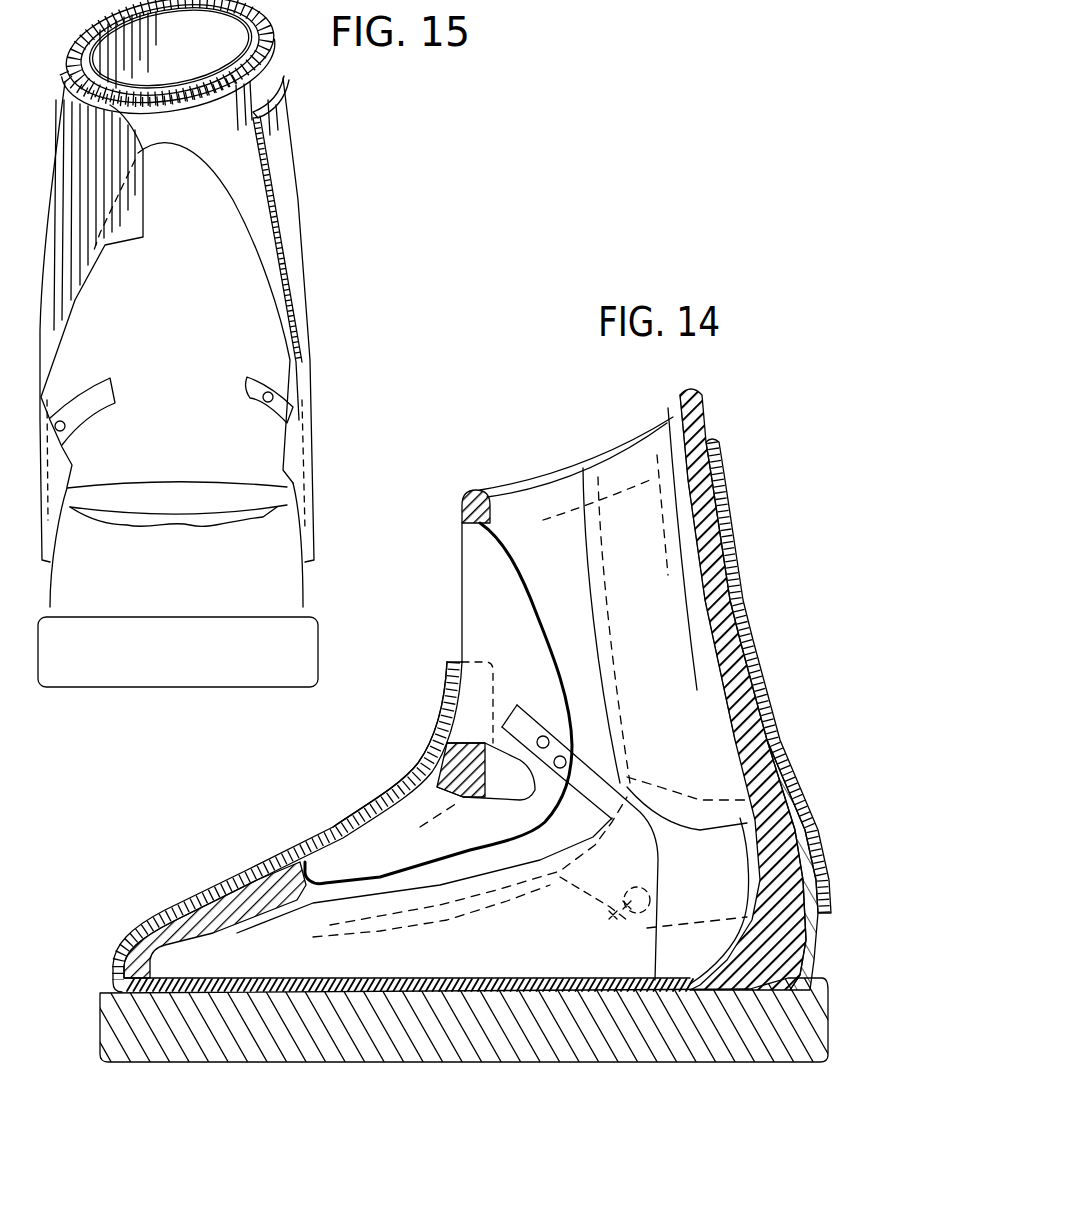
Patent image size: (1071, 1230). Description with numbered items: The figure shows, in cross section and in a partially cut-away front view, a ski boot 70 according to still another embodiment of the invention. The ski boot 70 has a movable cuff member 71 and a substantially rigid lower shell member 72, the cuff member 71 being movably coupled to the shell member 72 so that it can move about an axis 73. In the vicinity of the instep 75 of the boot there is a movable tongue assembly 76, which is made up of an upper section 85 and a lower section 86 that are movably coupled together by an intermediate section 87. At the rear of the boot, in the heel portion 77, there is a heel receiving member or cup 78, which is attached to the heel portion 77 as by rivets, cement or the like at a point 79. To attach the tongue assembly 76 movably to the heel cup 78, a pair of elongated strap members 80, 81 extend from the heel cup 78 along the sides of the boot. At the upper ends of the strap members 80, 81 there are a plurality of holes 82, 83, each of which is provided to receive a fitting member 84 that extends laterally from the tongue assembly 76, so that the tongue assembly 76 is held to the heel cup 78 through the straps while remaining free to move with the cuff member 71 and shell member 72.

In FIG. 14, the ski boot 70 is at (750, 603).
In FIG. 14, the cuff member 71 is at (732, 533).
In FIG. 14, the lower shell member 72 is at (227, 880).
In FIG. 14, the axis 73 is at (653, 916).
In FIG. 14, the instep 75 is at (425, 785).
In FIG. 14, the tongue assembly 76 is at (453, 613).
In FIG. 14, the heel portion 77 is at (696, 908).
In FIG. 14, the heel receiving member 78 is at (780, 714).
In FIG. 14, the point 79 is at (714, 957).
In FIG. 15, the strap member 80 is at (248, 385).
In FIG. 14, the strap member 80 is at (630, 778).
In FIG. 15, the strap member 81 is at (108, 388).
In FIG. 14, the hole 82 is at (565, 765).
In FIG. 14, the hole 83 is at (553, 737).
In FIG. 14, the fitting member 84 is at (550, 730).
In FIG. 15, the upper section 85 is at (190, 229).
In FIG. 14, the upper section 85 is at (513, 592).
In FIG. 15, the lower section 86 is at (233, 518).
In FIG. 14, the lower section 86 is at (428, 853).
In FIG. 14, the intermediate section 87 is at (556, 792).